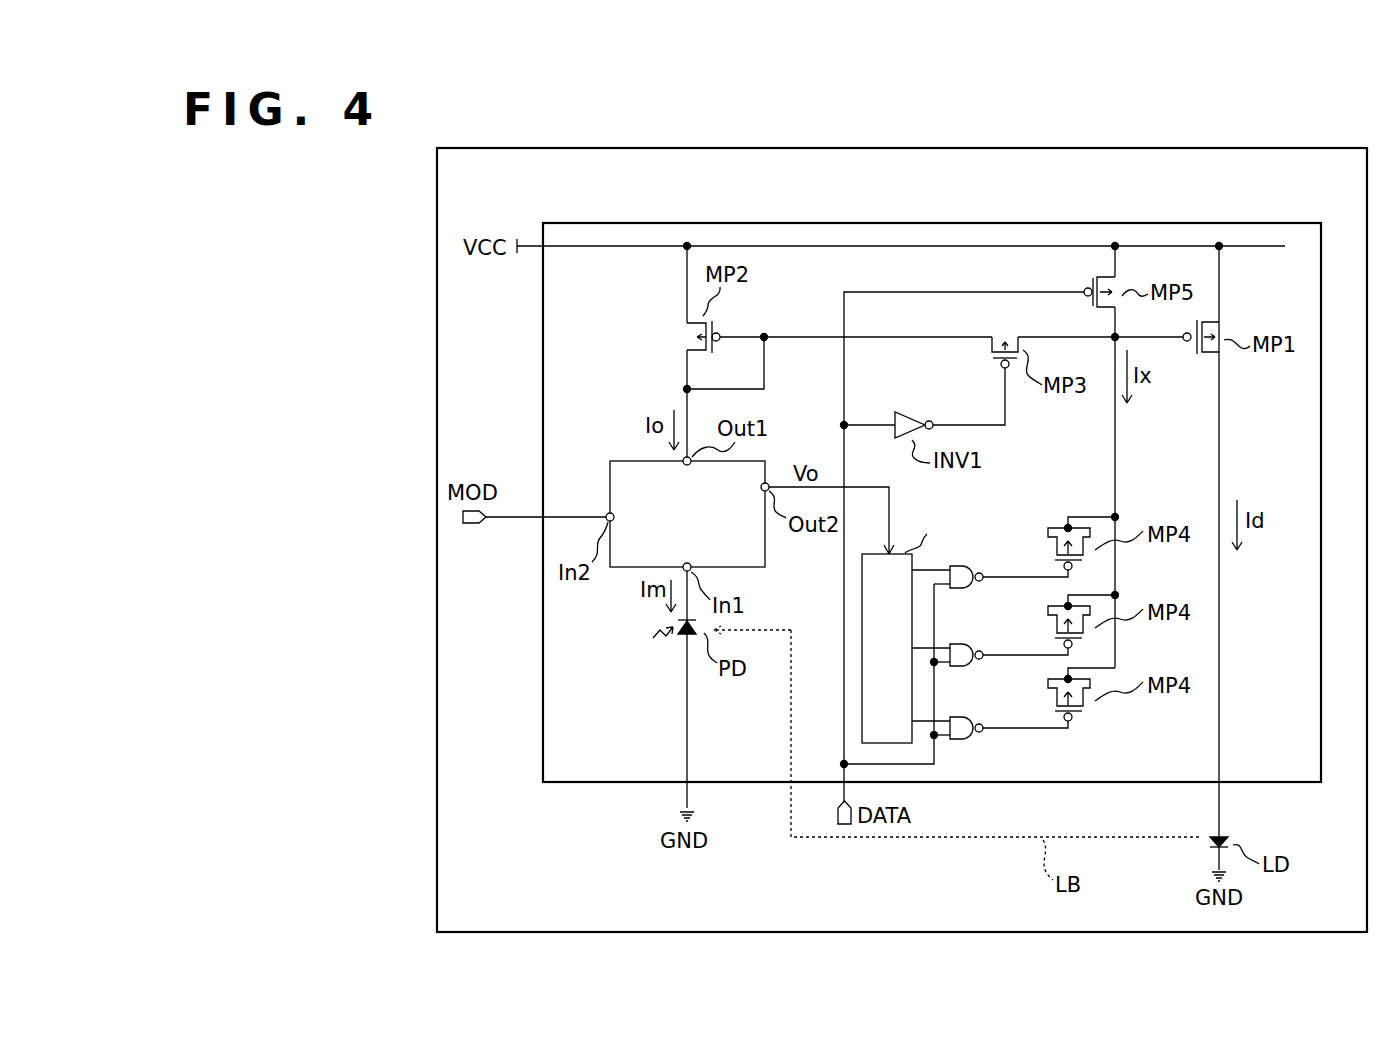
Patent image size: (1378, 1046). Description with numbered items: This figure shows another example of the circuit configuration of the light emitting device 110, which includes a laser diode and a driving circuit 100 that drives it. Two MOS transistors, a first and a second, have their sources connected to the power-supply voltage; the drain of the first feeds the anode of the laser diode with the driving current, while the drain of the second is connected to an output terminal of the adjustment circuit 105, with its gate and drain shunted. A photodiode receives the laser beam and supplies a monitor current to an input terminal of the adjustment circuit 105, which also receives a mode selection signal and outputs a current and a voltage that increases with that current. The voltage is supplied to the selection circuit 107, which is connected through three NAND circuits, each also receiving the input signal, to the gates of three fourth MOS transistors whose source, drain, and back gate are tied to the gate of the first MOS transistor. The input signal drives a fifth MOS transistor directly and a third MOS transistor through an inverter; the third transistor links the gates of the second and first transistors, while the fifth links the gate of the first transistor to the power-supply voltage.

The light emitting device 110 is at (1022, 148).
The driving circuit 100 is at (1078, 223).
The adjustment circuit 105 is at (611, 460).
The selection circuit 107 is at (908, 655).